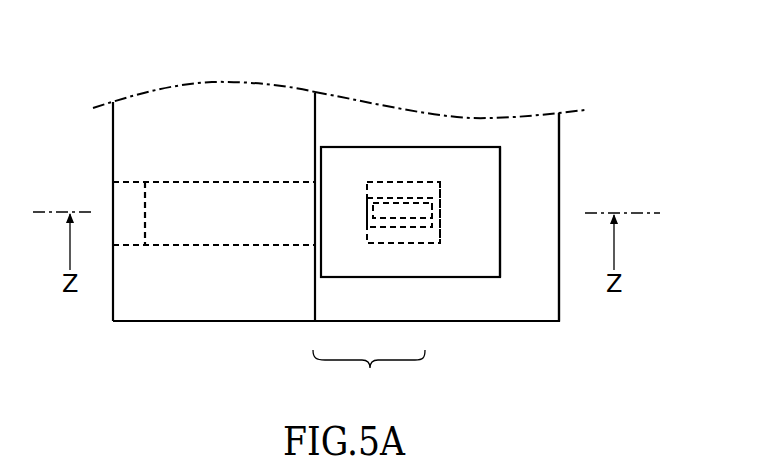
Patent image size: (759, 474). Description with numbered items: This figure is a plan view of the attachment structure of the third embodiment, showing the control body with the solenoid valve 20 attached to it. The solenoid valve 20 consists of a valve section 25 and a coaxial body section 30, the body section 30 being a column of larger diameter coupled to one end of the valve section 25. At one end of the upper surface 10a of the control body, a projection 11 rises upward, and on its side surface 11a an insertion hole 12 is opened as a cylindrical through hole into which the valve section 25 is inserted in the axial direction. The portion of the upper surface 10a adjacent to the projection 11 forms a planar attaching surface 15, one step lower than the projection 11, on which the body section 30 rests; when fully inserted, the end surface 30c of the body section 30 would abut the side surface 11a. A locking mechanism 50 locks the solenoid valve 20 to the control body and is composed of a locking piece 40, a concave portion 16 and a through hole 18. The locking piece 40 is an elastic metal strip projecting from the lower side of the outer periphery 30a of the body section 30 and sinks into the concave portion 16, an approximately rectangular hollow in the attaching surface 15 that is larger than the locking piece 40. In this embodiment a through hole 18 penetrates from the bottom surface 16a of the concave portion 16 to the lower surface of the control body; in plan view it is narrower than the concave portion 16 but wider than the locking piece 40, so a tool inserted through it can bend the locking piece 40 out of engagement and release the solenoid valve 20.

The upper surface 10a is at (626, 227).
The projection 11 is at (215, 110).
The side surface 11a is at (320, 108).
The insertion hole 12 is at (131, 197).
The attaching surface 15 is at (535, 308).
The concave portion 16 is at (367, 187).
The bottom surface 16a is at (436, 232).
The through hole 18 is at (370, 213).
The solenoid valve 20 is at (411, 145).
The valve section 25 is at (237, 200).
The body section 30 is at (465, 157).
The outer periphery 30a is at (489, 162).
The end surface 30c is at (318, 147).
The locking piece 40 is at (405, 222).
The locking mechanism 50 is at (369, 375).